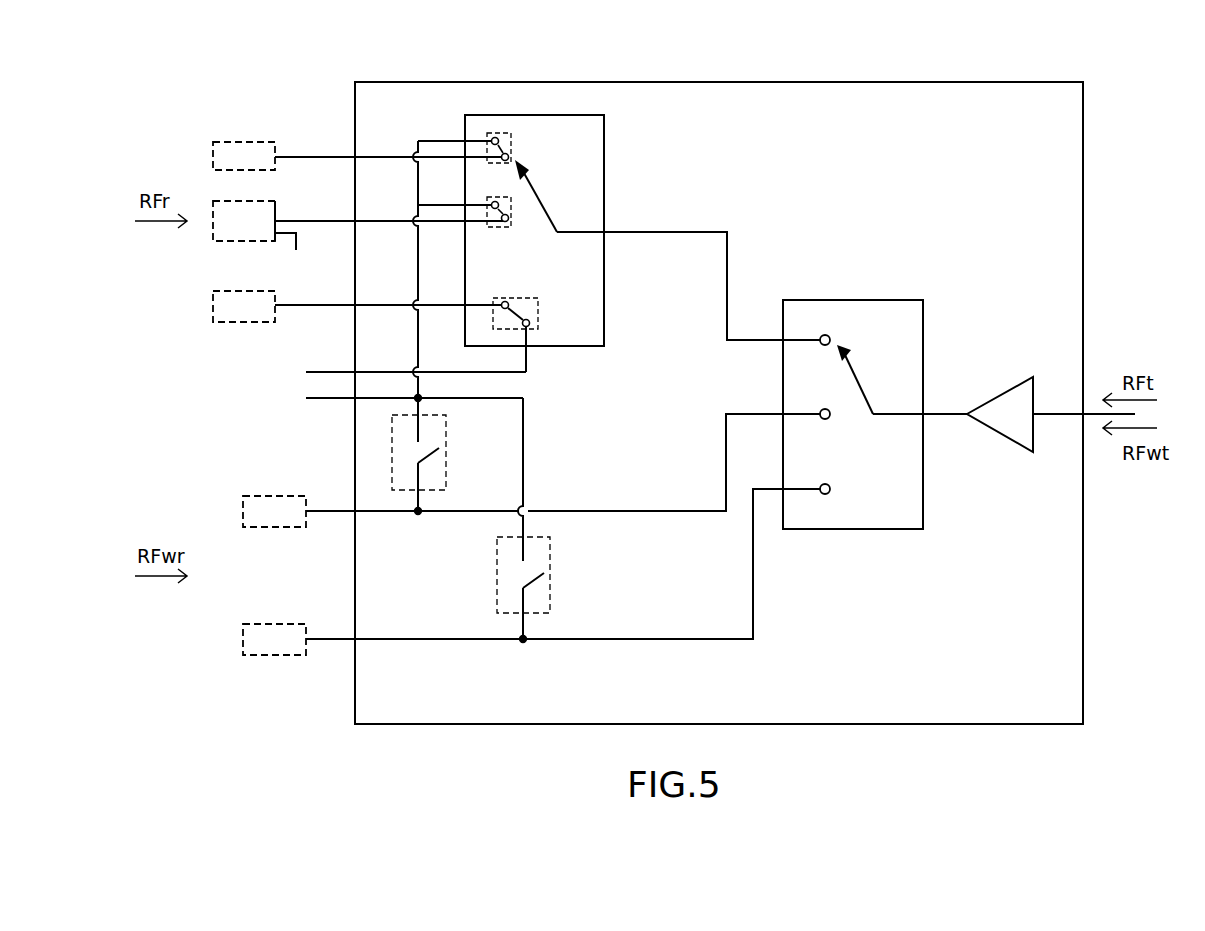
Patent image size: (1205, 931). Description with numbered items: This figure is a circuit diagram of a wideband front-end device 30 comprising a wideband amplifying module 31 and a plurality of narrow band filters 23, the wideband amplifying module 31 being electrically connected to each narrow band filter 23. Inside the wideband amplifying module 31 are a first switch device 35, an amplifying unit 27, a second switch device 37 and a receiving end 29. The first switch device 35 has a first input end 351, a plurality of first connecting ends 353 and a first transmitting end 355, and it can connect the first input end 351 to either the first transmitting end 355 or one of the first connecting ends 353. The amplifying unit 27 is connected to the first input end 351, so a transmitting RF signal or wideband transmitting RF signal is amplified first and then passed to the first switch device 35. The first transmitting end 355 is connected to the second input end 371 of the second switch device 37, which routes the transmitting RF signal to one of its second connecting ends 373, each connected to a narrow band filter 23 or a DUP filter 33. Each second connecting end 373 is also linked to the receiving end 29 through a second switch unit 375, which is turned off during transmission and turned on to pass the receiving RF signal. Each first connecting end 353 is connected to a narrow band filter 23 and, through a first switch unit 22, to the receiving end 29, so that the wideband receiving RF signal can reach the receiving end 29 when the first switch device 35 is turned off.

The wideband front-end device 30 is at (241, 93).
The wideband amplifying module 31 is at (1068, 148).
The narrow band filter 23 is at (268, 143).
The DUP filter 33 is at (268, 204).
The second connecting end 373 is at (375, 158).
The second switch device 37 is at (604, 140).
The second switch unit 375 is at (513, 143).
The second input end 371 is at (632, 232).
The first transmitting end 355 is at (738, 338).
The first switch device 35 is at (888, 307).
The first connecting end 353 is at (664, 510).
The first input end 351 is at (943, 416).
The amplifying unit 27 is at (1015, 395).
The receiving end 29 is at (295, 383).
The first switch unit 22 is at (437, 430).